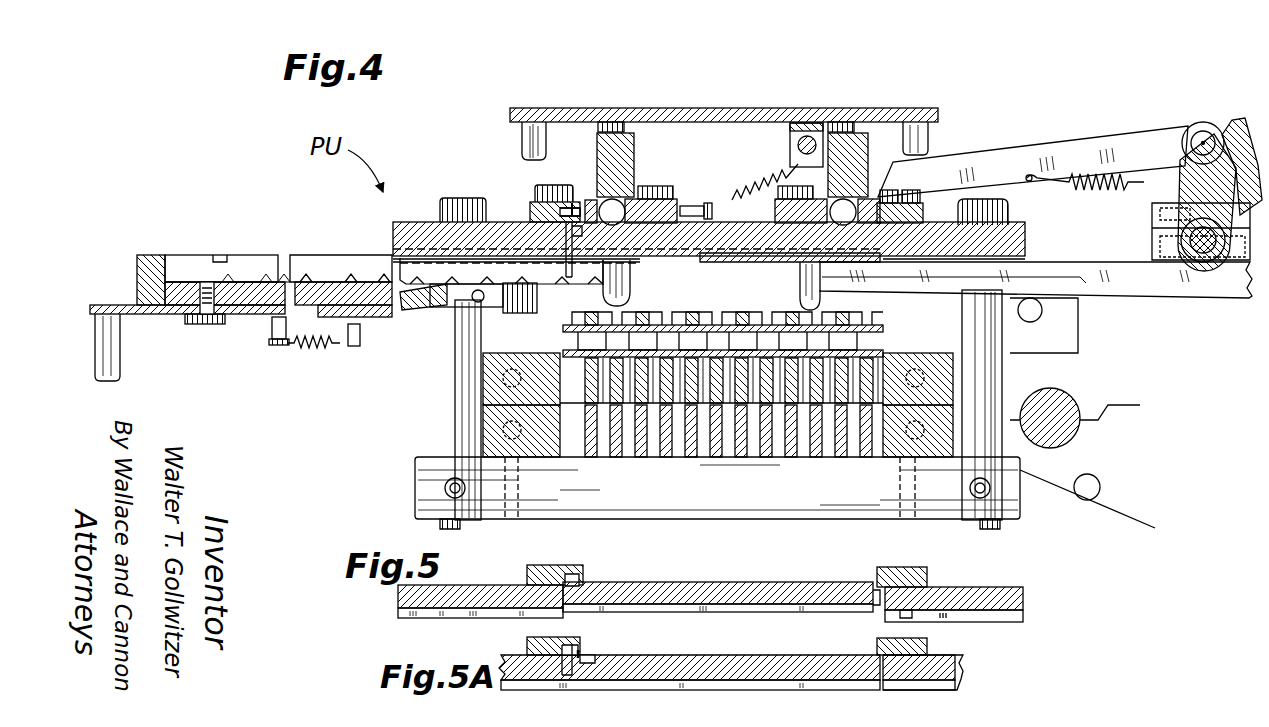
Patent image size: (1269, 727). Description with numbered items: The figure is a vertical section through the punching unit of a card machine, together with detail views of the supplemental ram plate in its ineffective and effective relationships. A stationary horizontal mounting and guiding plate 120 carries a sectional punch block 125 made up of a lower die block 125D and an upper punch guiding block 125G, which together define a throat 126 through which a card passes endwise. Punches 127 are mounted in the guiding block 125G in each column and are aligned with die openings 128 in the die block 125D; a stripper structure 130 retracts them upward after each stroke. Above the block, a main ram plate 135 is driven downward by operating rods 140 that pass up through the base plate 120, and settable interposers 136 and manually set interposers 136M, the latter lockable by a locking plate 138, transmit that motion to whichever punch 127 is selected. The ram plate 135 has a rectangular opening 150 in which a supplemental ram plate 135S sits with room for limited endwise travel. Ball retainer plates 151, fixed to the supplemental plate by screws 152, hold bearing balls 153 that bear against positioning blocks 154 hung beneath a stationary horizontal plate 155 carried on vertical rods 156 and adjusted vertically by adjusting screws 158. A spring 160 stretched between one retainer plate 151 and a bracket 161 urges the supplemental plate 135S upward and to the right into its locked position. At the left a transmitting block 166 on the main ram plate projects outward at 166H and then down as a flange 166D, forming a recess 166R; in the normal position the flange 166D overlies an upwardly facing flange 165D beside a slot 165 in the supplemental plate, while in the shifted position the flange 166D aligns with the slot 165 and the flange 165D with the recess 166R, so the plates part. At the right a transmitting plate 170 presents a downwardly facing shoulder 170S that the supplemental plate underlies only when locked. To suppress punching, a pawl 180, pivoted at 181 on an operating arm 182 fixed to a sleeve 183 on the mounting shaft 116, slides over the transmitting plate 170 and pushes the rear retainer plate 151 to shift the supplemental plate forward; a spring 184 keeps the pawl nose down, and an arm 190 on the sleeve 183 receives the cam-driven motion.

In FIG. 4, the mounting shaft 116 is at (1200, 244).
In FIG. 4, the mounting and guiding plate 120 is at (415, 477).
In FIG. 4, the sectional punch block 125 is at (668, 405).
In FIG. 4, the upper punch guiding block 125G is at (495, 372).
In FIG. 4, the lower die block 125D is at (495, 430).
In FIG. 4, the throat 126 is at (617, 460).
In FIG. 4, the punches 127 is at (563, 352).
In FIG. 4, the die openings 128 is at (686, 460).
In FIG. 4, the stripper structure 130 is at (563, 327).
In FIG. 4, the main ram plate 135 is at (414, 220).
In FIG. 5, the main ram plate 135 is at (400, 598).
In FIG. 4, the supplemental ram plate 135S is at (708, 232).
In FIG. 5, the supplemental ram plate 135S is at (694, 582).
In FIG. 5A, the supplemental ram plate 135S is at (700, 664).
In FIG. 4, the interposers 136 is at (1134, 298).
In FIG. 4, the manually settable interposers 136M is at (341, 252).
In FIG. 4, the locking plate 138 is at (174, 314).
In FIG. 4, the operating rods 140 is at (450, 340).
In FIG. 5, the opening 150 is at (885, 612).
In FIG. 4, the ball retainer plates 151 is at (682, 205).
In FIG. 4, the screws 152 is at (676, 200).
In FIG. 4, the bearing balls 153 is at (618, 208).
In FIG. 4, the positioning blocks 154 is at (630, 172).
In FIG. 4, the stationary horizontal plate 155 is at (700, 110).
In FIG. 4, the vertical rods 156 is at (518, 130).
In FIG. 4, the adjusting screws 158 is at (621, 122).
In FIG. 4, the spring 160 is at (762, 180).
In FIG. 4, the bracket 161 is at (790, 140).
In FIG. 4, the slot 165 is at (575, 244).
In FIG. 5A, the slot 165 is at (598, 662).
In FIG. 5A, the upwardly facing flange 165D is at (570, 670).
In FIG. 4, the transmitting block 166 is at (530, 208).
In FIG. 5, the transmitting block 166 is at (562, 566).
In FIG. 5A, the transmitting block 166 is at (527, 642).
In FIG. 4, the downwardly projecting flange 166D is at (576, 206).
In FIG. 5A, the downwardly projecting flange 166D is at (582, 652).
In FIG. 4, the outwardly projecting portion 166H is at (568, 196).
In FIG. 4, the downwardly facing recess 166R is at (530, 221).
In FIG. 5A, the downwardly facing recess 166R is at (570, 646).
In FIG. 4, the transmitting plate 170 is at (924, 220).
In FIG. 5, the transmitting plate 170 is at (929, 573).
In FIG. 5A, the transmitting plate 170 is at (929, 644).
In FIG. 5, the downwardly facing shoulder 170S is at (872, 596).
In FIG. 4, the pawl 180 is at (984, 158).
In FIG. 4, the pivot 181 is at (1203, 122).
In FIG. 4, the operating arm 182 is at (1188, 152).
In FIG. 4, the sleeve 183 is at (1210, 265).
In FIG. 4, the spring 184 is at (1107, 198).
In FIG. 4, the arm 190 is at (1240, 128).